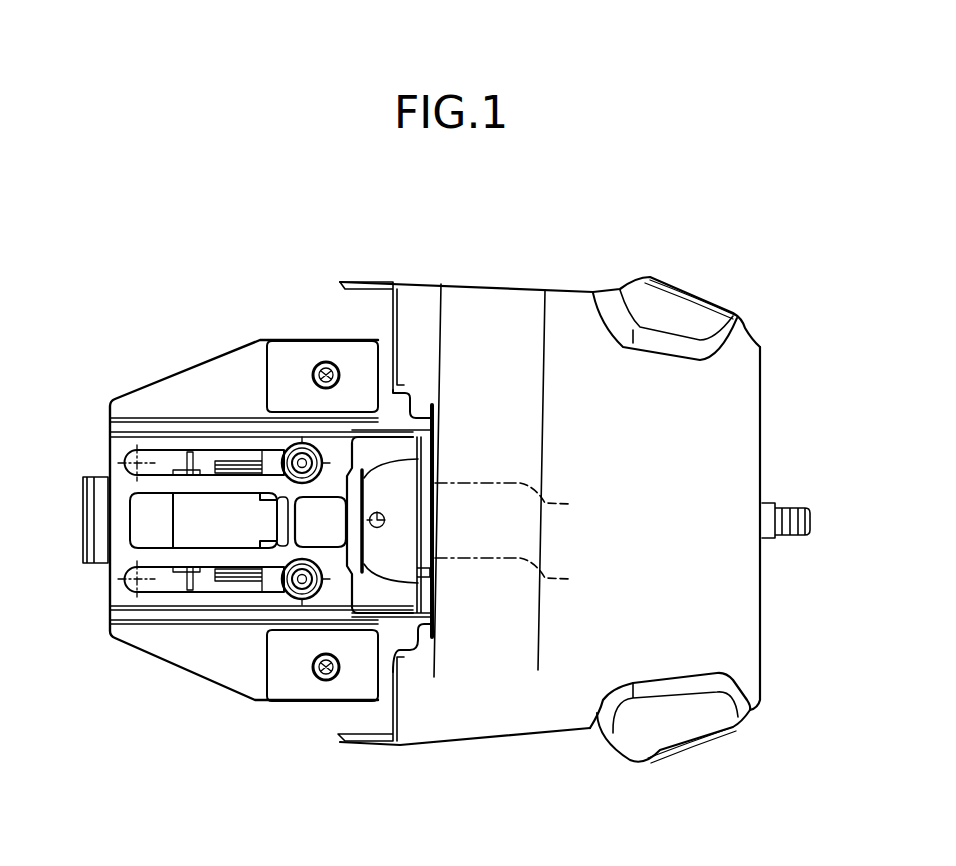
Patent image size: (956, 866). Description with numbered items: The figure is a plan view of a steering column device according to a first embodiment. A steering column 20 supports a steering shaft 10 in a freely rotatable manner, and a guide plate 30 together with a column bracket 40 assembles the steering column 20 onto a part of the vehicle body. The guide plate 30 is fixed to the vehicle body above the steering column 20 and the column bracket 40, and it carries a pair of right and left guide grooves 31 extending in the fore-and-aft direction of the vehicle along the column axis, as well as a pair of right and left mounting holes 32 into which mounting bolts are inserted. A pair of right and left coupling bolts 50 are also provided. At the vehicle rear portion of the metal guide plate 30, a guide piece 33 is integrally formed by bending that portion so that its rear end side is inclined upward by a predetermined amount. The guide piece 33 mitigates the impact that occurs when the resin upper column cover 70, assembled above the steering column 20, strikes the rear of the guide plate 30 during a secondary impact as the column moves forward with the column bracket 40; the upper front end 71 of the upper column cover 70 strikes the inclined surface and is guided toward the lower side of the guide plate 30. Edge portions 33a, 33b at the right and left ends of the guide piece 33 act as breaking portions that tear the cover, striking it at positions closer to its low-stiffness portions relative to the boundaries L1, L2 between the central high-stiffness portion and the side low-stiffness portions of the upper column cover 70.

The steering shaft 10 is at (768, 500).
The steering column 20 is at (111, 479).
The guide plate 30 is at (204, 364).
The guide groove 31 is at (161, 454).
The mounting hole 32 is at (324, 362).
The guide piece 33 is at (357, 496).
The edge portion 33a is at (377, 480).
The edge portion 33b is at (360, 558).
The column bracket 40 is at (410, 418).
The coupling bolt 50 is at (282, 452).
The upper column cover 70 is at (753, 378).
The upper front end 71 is at (436, 519).
The boundary L1 is at (520, 501).
The boundary L2 is at (520, 577).